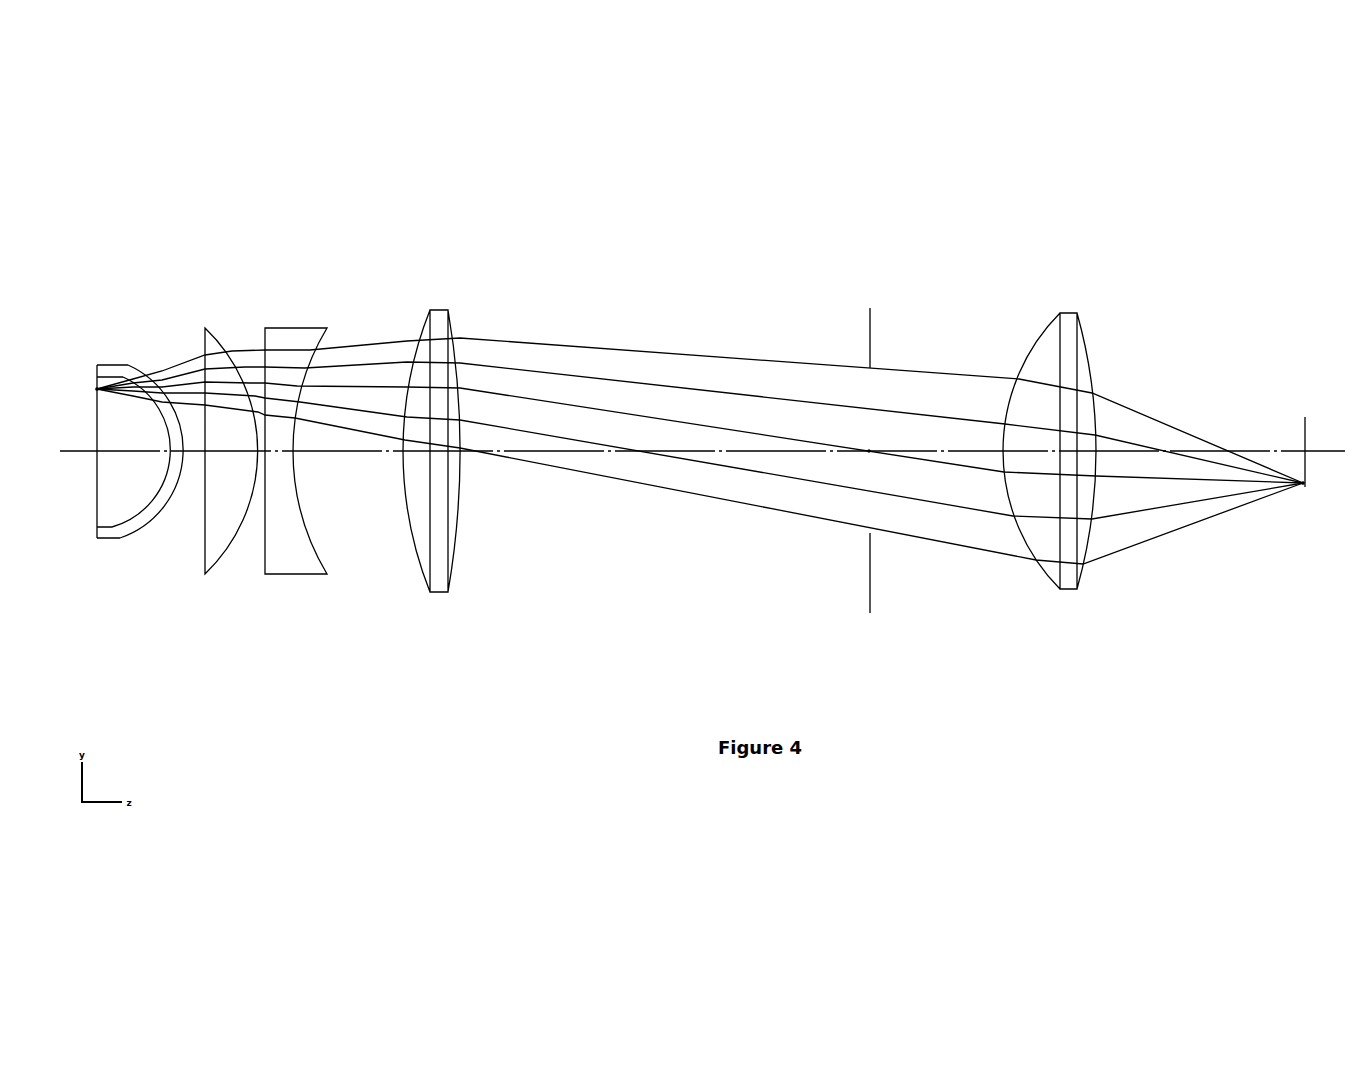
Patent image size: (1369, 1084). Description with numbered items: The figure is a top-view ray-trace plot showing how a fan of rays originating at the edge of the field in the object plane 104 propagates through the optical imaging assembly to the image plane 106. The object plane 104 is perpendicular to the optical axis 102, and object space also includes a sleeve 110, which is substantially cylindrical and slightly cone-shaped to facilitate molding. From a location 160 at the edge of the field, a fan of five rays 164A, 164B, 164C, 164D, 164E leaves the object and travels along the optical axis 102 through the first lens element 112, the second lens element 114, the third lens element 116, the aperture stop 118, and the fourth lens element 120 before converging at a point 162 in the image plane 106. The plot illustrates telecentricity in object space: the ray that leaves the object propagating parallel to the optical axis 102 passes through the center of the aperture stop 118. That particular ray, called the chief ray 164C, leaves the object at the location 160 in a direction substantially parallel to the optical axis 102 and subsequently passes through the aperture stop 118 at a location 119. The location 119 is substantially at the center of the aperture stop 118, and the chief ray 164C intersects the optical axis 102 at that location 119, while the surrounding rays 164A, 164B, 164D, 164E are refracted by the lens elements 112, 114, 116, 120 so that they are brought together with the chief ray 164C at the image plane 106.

The optical axis 102 is at (1253, 449).
The object plane 104 is at (100, 508).
The image plane 106 is at (1300, 418).
The sleeve 110 is at (118, 372).
The first lens element 112 is at (214, 337).
The second lens element 114 is at (291, 338).
The third lens element 116 is at (437, 318).
The aperture stop 118 is at (874, 310).
The location 119 is at (868, 452).
The fourth lens element 120 is at (1066, 318).
The location 160 is at (95, 383).
The focal point 162 is at (1307, 490).
The light ray 164A is at (583, 339).
The light ray 164B is at (608, 367).
The chief ray 164C is at (687, 423).
The light ray 164D is at (684, 461).
The light ray 164E is at (736, 508).